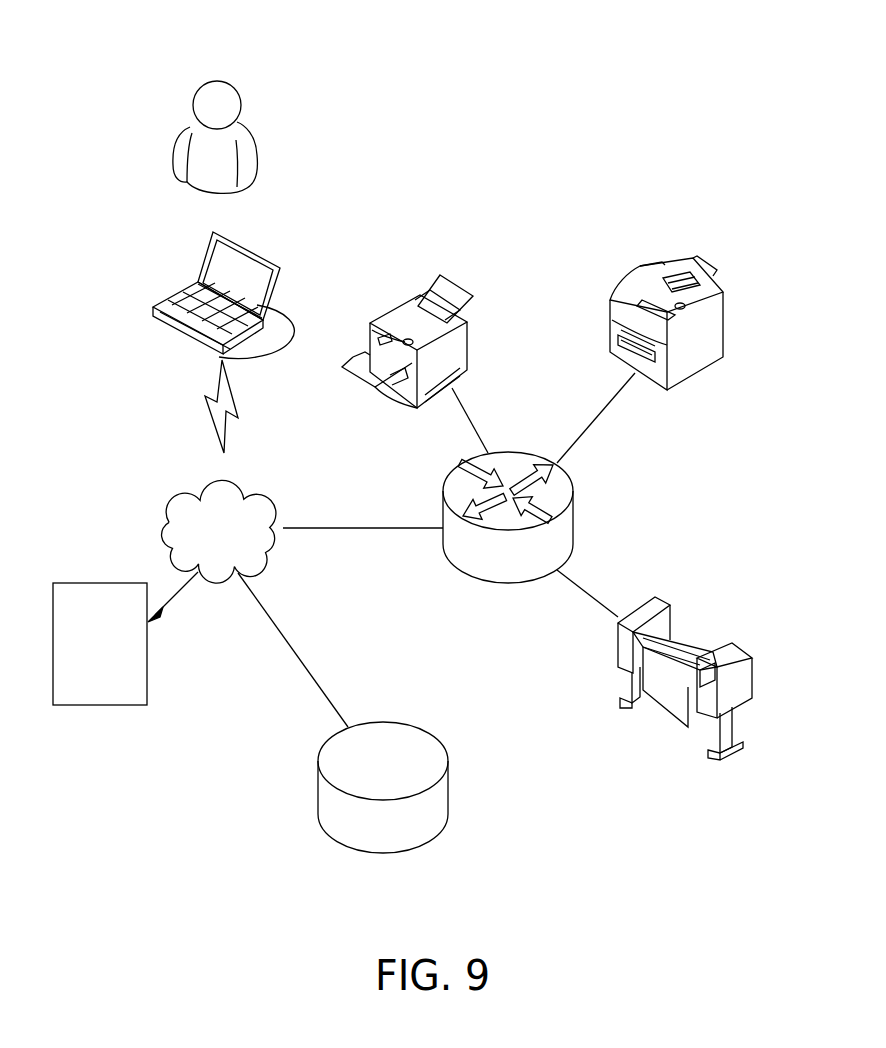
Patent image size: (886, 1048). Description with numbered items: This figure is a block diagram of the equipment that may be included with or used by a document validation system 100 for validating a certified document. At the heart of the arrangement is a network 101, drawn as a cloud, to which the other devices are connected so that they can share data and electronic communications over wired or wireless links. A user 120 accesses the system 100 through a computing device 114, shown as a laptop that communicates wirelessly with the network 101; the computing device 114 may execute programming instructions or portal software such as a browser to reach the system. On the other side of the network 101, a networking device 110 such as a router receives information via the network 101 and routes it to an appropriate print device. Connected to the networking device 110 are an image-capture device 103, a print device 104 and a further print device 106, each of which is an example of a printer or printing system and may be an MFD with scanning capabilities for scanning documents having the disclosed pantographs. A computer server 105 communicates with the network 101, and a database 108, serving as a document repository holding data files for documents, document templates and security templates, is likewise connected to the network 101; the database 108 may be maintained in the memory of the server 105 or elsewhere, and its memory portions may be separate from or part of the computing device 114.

The document validation system 100 is at (98, 68).
The network 101 is at (173, 507).
The image-capture device 103 is at (385, 315).
The print device 104 is at (625, 276).
The computer server 105 is at (97, 707).
The print device 106 is at (752, 679).
The database 108 is at (318, 800).
The networking device 110 is at (575, 525).
The computing device 114 is at (203, 262).
The user 120 is at (244, 106).